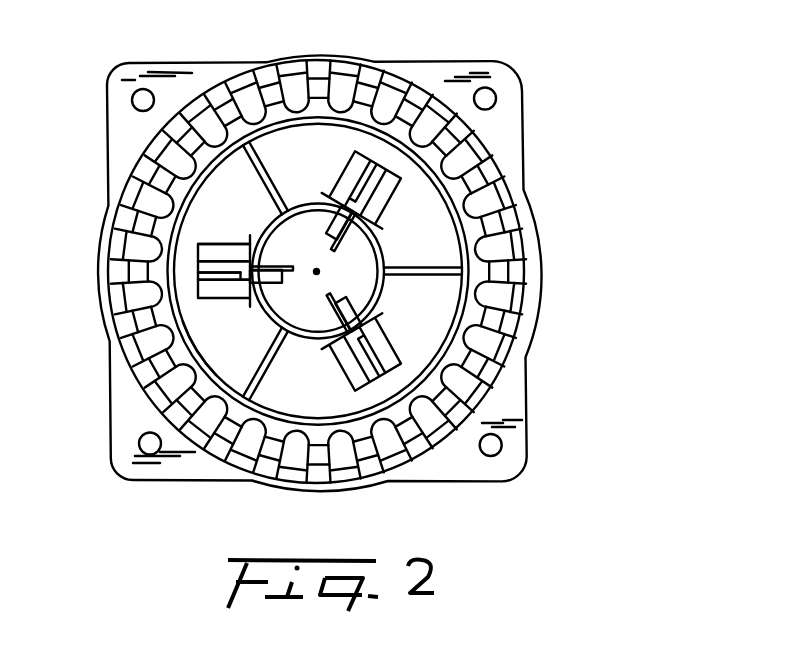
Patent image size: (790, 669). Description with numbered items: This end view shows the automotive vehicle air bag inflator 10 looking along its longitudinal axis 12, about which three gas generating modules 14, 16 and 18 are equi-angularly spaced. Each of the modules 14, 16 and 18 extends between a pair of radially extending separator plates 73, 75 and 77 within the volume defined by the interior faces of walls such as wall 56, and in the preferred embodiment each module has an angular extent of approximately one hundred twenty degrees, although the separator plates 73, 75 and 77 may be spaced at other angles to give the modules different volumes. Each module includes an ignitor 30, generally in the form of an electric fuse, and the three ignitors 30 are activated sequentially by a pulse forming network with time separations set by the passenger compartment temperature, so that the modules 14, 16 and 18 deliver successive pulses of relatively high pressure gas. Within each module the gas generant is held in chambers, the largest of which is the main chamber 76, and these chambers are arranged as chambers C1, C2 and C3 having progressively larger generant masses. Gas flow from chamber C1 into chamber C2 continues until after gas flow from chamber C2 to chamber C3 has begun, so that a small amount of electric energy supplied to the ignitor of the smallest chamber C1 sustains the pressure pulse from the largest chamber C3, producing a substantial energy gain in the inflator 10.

The automotive vehicle air bag inflator 10 is at (570, 403).
The longitudinal axis 12 is at (190, 183).
The module 14 is at (316, 270).
The module 16 is at (343, 140).
The module 18 is at (440, 335).
The ignitor 30 is at (217, 262).
The wall 56 is at (372, 291).
The separator plate 73 is at (262, 165).
The separator plate 75 is at (450, 275).
The main chamber 76 is at (438, 219).
The separator plate 77 is at (256, 388).
The chamber C1 is at (196, 273).
The chamber C2 is at (195, 243).
The chamber C3 is at (206, 347).